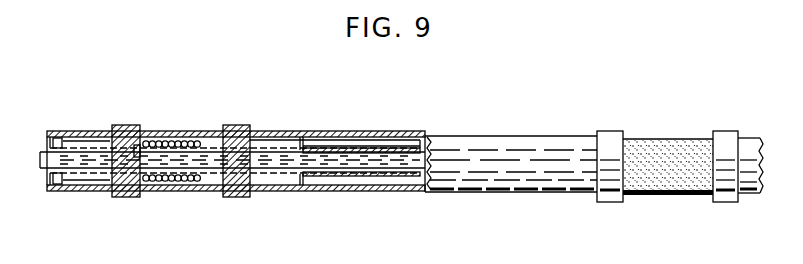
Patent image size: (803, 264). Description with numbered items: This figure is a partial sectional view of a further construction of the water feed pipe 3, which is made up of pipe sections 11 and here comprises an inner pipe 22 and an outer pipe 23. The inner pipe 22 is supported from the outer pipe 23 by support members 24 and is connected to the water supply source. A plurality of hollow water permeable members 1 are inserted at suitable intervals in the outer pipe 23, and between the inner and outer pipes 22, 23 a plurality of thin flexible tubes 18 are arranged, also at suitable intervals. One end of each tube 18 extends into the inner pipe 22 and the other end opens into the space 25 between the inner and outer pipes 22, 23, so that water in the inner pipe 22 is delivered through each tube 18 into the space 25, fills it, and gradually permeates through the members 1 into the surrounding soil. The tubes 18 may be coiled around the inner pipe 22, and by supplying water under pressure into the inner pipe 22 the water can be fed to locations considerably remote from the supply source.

The hollow water permeable member 1 is at (175, 191).
The water feed pipe 3 is at (478, 134).
The pipe section 11 is at (85, 131).
The thin flexible tube 18 is at (177, 140).
The inner pipe 22 is at (395, 148).
The outer pipe 23 is at (364, 136).
The support member 24 is at (62, 186).
The space 25 is at (262, 181).